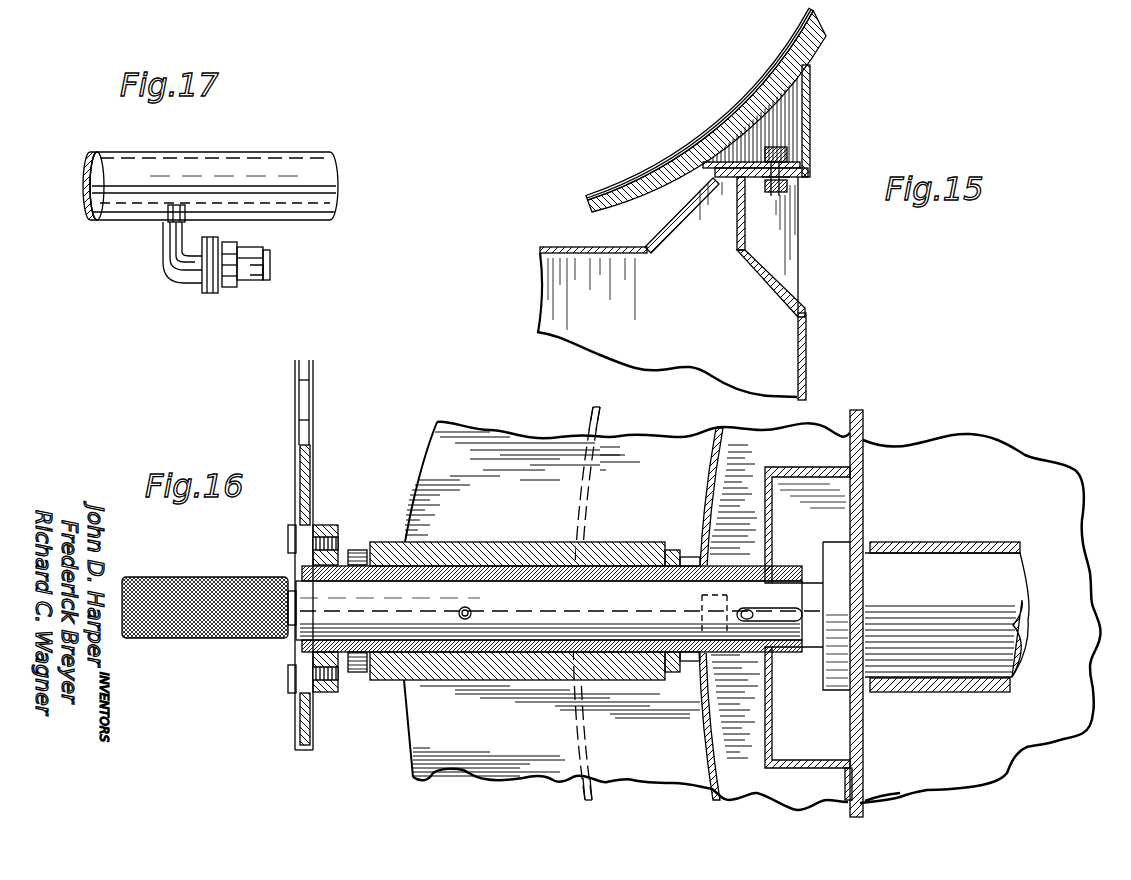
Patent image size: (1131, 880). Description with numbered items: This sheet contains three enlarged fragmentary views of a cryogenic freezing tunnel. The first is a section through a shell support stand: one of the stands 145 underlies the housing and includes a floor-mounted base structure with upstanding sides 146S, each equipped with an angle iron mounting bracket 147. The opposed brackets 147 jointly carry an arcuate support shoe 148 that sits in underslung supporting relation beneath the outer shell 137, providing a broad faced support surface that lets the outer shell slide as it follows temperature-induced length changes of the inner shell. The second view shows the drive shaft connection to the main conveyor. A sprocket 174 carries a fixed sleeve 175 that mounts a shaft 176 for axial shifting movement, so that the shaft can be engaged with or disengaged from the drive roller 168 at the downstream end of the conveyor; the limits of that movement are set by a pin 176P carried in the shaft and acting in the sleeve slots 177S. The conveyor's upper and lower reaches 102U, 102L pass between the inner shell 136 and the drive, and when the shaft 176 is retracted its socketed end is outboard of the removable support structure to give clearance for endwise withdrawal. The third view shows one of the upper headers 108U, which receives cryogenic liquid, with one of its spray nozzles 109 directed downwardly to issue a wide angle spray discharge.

In FIG. 17, the upper pair of headers 108U is at (301, 170).
In FIG. 17, the spray nozzles 109 is at (270, 252).
In FIG. 15, the outer shell 137 is at (652, 173).
In FIG. 16, the outer shell 137 is at (603, 422).
In FIG. 15, the arcuate support shoe 148 is at (740, 128).
In FIG. 15, the angle iron mounting bracket 147 is at (812, 122).
In FIG. 15, the upstanding sides 146S is at (775, 292).
In FIG. 15, the stands 145 is at (809, 357).
In FIG. 16, the inner shell 136 is at (721, 436).
In FIG. 16, the sprocket 174 is at (313, 518).
In FIG. 16, the fixed sleeve 175 is at (496, 562).
In FIG. 16, the shaft 176 is at (472, 609).
In FIG. 16, the pin 176P is at (458, 610).
In FIG. 16, the sleeve slots 177S is at (558, 612).
In FIG. 16, the drive roller 168 is at (985, 570).
In FIG. 16, the upper reach 102U is at (1010, 545).
In FIG. 16, the lower reach 102L is at (985, 692).